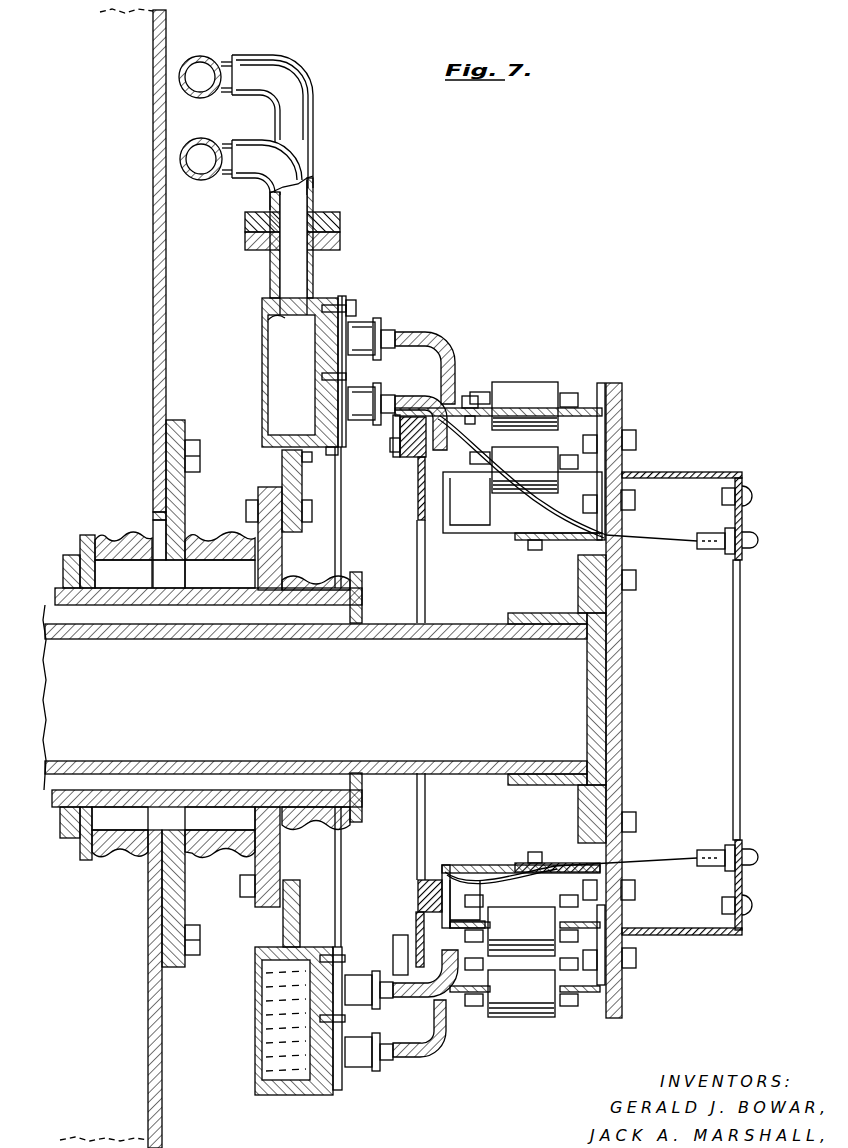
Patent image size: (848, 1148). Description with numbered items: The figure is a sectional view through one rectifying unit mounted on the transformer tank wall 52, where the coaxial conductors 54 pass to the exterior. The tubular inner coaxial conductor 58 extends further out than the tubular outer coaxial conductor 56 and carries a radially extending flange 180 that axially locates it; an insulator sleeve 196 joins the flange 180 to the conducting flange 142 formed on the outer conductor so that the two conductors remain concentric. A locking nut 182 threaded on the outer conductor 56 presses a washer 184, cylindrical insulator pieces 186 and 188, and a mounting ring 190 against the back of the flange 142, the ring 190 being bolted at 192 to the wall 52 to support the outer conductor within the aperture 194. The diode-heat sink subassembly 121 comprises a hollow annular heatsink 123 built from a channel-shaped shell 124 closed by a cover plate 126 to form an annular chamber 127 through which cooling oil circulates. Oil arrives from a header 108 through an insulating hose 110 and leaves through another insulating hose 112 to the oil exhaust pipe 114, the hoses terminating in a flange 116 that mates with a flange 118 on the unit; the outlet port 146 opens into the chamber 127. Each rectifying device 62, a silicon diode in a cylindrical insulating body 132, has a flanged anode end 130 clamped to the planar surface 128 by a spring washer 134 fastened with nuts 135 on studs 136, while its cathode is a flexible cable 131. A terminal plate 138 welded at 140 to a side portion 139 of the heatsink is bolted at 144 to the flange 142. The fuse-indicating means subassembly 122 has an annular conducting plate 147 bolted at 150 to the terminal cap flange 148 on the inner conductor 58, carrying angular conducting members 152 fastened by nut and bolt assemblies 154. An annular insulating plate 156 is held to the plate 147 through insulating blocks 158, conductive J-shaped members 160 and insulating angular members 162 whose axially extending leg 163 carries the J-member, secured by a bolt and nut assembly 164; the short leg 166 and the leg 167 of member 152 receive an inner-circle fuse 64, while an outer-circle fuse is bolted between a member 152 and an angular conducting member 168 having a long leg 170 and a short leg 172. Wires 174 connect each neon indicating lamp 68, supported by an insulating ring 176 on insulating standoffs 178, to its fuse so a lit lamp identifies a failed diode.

The transformer tank wall 52 is at (157, 248).
The coaxial conductors 54 is at (34, 699).
The outer coaxial conductor 56 is at (60, 598).
The inner coaxial conductor 58 is at (50, 630).
The rectifying device 62 is at (380, 366).
The fuse 64 is at (523, 386).
The neon indicating lamp 68 is at (758, 542).
The oil delivery header 108 is at (201, 56).
The insulating hose 110 is at (290, 80).
The insulating hose 112 is at (292, 162).
The oil exhaust pipe 114 is at (201, 138).
The flange 116 is at (250, 222).
The mating flange 118 is at (250, 240).
The diode-heat sink subassembly 121 is at (398, 292).
The fuse-indicating means subassembly 122 is at (568, 364).
The hollow annular member 123 is at (262, 360).
The shell 124 is at (322, 300).
The cover plate 126 is at (265, 430).
The annular chamber 127 is at (275, 392).
The planar surface 128 is at (342, 496).
The flanged end portion 130 is at (340, 326).
The flexible conductive cable 131 is at (428, 352).
The cylindrical insulating body 132 is at (368, 340).
The spring washer 134 is at (340, 346).
The nut 135 is at (352, 310).
The stud 136 is at (344, 306).
The first rectifier unit terminal 138 is at (290, 468).
The side portion 139 is at (339, 450).
The weld 140 is at (306, 463).
The conducting flange 142 is at (283, 545).
The bolt 144 is at (314, 510).
The outlet port 146 is at (278, 318).
The annular conducting plate 147 is at (623, 392).
The terminal cap flange 148 is at (604, 630).
The bolt 150 is at (634, 578).
The angular conducting member 152 is at (592, 408).
The nut and bolt assembly 154 is at (633, 440).
The annular insulating plate 156 is at (408, 516).
The insulating block 158 is at (442, 518).
The conductive J-shaped member 160 is at (484, 535).
The insulating angular member 162 is at (550, 541).
The axially extending leg 163 is at (494, 864).
The bolt and nut assembly 164 is at (418, 890).
The short leg 166 is at (458, 921).
The axially extending leg 167 is at (590, 921).
The angular conducting member 168 is at (442, 410).
The long leg 170 is at (466, 408).
The short leg 172 is at (400, 460).
The wire 174 is at (486, 520).
The insulating ring 176 is at (745, 487).
The insulating standoff 178 is at (681, 470).
The radially extending flange 180 is at (363, 587).
The locking nut 182 is at (65, 822).
The washer 184 is at (80, 853).
The cylindrical insulator piece 186 is at (222, 862).
The cylindrical insulator piece 188 is at (126, 862).
The mounting ring 190 is at (170, 443).
The bolt 192 is at (196, 470).
The aperture 194 is at (155, 518).
The insulator sleeve 196 is at (297, 812).